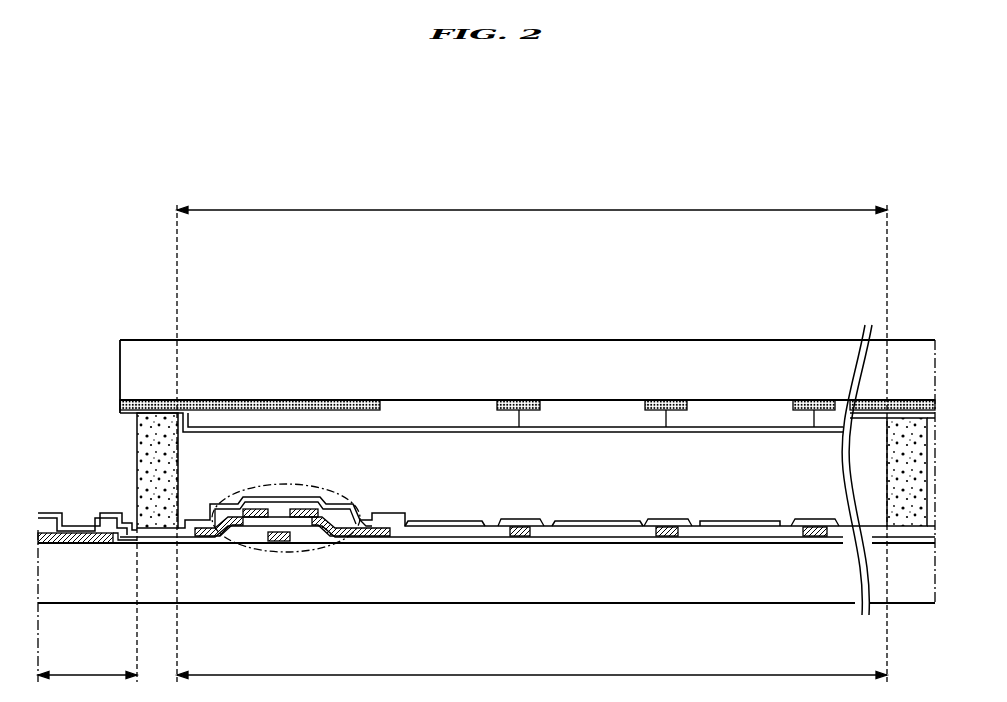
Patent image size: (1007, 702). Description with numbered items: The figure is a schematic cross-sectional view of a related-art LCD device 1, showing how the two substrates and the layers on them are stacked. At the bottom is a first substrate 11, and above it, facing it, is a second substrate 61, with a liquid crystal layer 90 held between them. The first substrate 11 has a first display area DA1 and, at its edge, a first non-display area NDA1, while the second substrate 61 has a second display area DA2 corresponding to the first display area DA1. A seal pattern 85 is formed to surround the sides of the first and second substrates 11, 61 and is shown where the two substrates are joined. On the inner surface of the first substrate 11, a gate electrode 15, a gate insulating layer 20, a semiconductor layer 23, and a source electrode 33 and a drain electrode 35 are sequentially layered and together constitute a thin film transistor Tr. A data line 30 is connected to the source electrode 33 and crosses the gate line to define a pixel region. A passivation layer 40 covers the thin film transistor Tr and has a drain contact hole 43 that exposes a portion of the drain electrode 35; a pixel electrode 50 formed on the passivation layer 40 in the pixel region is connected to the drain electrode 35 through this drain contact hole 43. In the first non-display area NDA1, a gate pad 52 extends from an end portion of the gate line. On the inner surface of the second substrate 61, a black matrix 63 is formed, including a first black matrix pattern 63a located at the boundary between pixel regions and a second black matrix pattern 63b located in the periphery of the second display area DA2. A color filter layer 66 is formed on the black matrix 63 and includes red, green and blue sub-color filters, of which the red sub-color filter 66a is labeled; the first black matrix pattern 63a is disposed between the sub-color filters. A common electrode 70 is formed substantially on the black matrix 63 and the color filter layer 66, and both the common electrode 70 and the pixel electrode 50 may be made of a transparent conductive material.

The LCD device 1 is at (735, 273).
The first substrate 11 is at (904, 579).
The gate electrode 15 is at (280, 543).
The gate insulating layer 20 is at (403, 546).
The semiconductor layer 23 is at (245, 540).
The data line 30 is at (522, 527).
The source electrode 33 is at (258, 507).
The drain electrode 35 is at (303, 507).
The passivation layer 40 is at (438, 530).
The drain contact hole 43 is at (371, 500).
The pixel electrode 50 is at (478, 523).
The gate pad 52 is at (86, 531).
The second substrate 61 is at (910, 380).
The black matrix 63 is at (363, 300).
The first black matrix pattern 63a is at (497, 400).
The second black matrix pattern 63b is at (352, 398).
The color filter layer 66 is at (553, 300).
The red sub-color filter 66a is at (513, 413).
The common electrode 70 is at (763, 430).
The seal pattern 85 is at (150, 436).
The liquid crystal layer 90 is at (190, 476).
The thin film transistor Tr is at (320, 550).
The first display area DA1 is at (532, 667).
The second display area DA2 is at (532, 202).
The first non-display area NDA1 is at (87, 667).